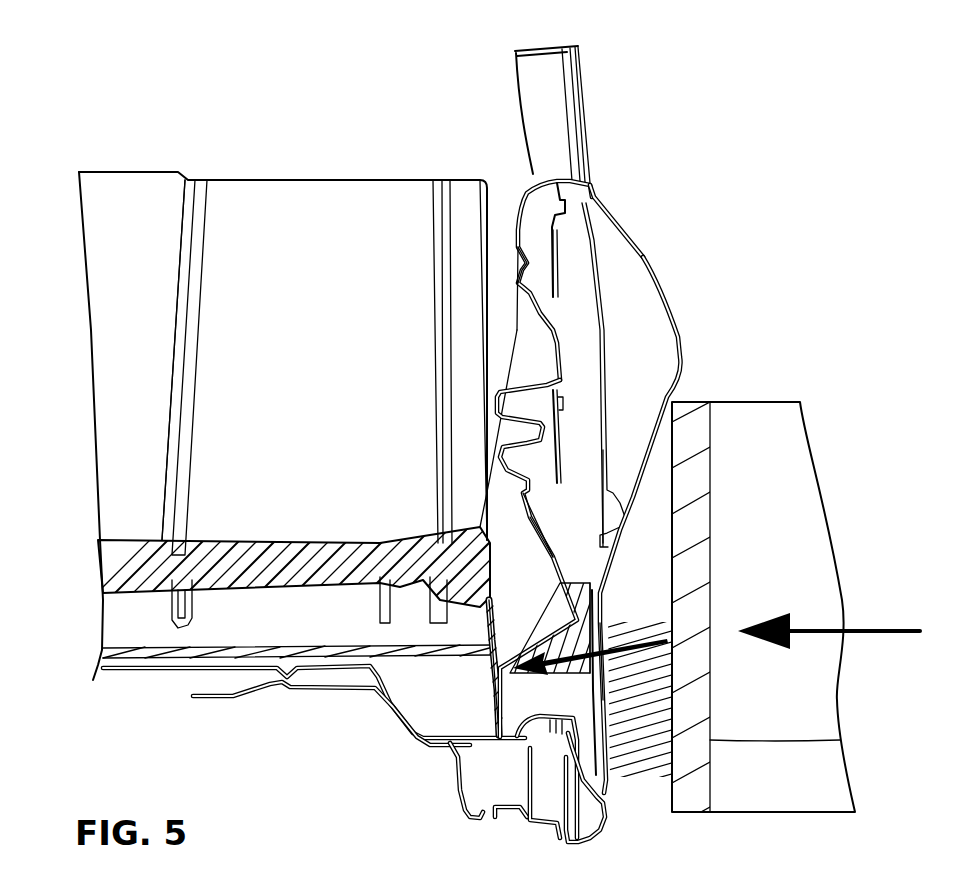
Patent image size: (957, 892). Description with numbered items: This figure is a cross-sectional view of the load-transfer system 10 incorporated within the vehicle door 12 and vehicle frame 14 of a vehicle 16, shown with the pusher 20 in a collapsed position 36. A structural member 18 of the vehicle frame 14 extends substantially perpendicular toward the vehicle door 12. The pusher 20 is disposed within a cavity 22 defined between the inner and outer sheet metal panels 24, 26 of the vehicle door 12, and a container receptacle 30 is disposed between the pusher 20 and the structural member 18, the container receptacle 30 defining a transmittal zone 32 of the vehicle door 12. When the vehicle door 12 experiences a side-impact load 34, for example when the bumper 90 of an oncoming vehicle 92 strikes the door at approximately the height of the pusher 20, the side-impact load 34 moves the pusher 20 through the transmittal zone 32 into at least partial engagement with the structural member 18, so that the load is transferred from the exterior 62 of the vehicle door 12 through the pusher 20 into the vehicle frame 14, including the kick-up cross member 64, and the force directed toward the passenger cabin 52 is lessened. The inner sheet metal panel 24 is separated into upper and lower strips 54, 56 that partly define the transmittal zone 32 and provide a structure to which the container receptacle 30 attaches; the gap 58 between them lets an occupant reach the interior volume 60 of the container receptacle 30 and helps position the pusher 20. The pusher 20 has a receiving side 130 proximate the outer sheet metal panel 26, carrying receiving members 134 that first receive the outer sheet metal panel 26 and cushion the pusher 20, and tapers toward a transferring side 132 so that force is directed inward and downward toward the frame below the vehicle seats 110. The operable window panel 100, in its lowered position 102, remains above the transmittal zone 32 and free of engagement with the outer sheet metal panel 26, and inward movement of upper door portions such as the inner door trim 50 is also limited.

The load-transfer system 10 is at (645, 817).
The vehicle door 12 is at (592, 98).
The vehicle frame 14 is at (208, 715).
The vehicle 16 is at (213, 112).
The structural member 18 is at (372, 668).
The pusher 20 is at (592, 560).
The cavity 22 is at (607, 197).
The inner sheet metal panel 24 is at (570, 232).
The outer sheet metal panel 26 is at (617, 213).
The container receptacle 30 is at (530, 563).
The transmittal zone 32 is at (475, 633).
The side-impact load 34 is at (862, 633).
The collapsed position 36 is at (606, 844).
The inner door trim 50 is at (523, 220).
The passenger cabin 52 is at (256, 118).
The upper strip 54 is at (527, 490).
The lower strip 56 is at (485, 607).
The gap 58 is at (510, 522).
The interior volume 60 is at (518, 603).
The exterior 62 is at (643, 257).
The kick-up cross member 64 is at (483, 743).
The bumper 90 is at (840, 740).
The oncoming vehicle 92 is at (677, 418).
The operable window panel 100 is at (597, 325).
The lowered position 102 is at (580, 346).
The vehicle seats 110 is at (218, 195).
The receiving side 130 is at (598, 612).
The transferring side 132 is at (490, 663).
The receiving members 134 is at (592, 590).